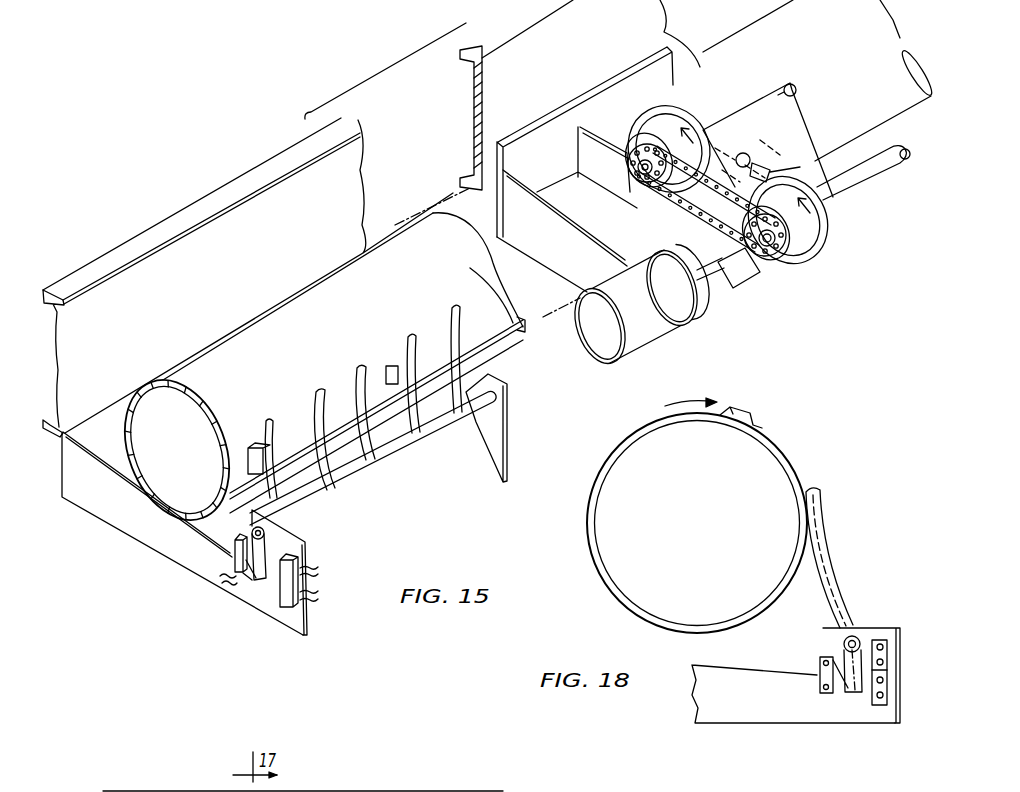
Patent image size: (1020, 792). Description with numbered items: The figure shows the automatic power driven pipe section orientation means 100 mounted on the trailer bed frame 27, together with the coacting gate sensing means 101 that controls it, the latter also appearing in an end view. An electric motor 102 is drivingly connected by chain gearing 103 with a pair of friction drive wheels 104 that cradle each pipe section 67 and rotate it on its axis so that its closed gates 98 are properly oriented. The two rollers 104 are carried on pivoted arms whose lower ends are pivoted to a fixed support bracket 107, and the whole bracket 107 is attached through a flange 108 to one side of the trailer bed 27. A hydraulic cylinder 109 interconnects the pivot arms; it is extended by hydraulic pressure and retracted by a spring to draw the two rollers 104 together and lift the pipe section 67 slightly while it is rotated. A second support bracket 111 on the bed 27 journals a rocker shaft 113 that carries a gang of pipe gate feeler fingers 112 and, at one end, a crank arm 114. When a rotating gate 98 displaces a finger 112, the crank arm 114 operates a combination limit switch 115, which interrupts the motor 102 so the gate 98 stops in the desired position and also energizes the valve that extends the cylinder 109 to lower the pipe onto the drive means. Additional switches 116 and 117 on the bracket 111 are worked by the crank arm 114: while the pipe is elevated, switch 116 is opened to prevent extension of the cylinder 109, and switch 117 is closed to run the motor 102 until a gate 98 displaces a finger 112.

In FIG. 15, the bed frame 27 is at (310, 242).
In FIG. 15, the pipe section 67 is at (255, 374).
In FIG. 18, the pipe section 67 is at (588, 553).
In FIG. 15, the gates 98 is at (297, 427).
In FIG. 18, the gates 98 is at (758, 418).
In FIG. 15, the pipe gate orientation means 100 is at (820, 251).
In FIG. 15, the gate sensing means 101 is at (410, 451).
In FIG. 15, the electric motor 102 is at (648, 311).
In FIG. 15, the chain gearing 103 is at (657, 223).
In FIG. 15, the friction drive wheels 104 is at (690, 118).
In FIG. 15, the support bracket 107 is at (606, 182).
In FIG. 15, the flange 108 is at (558, 127).
In FIG. 15, the hydraulic cylinder 109 is at (778, 165).
In FIG. 15, the support bracket 111 is at (107, 497).
In FIG. 18, the support bracket 111 is at (784, 713).
In FIG. 15, the pipe gate feeler fingers 112 is at (320, 387).
In FIG. 18, the pipe gate feeler fingers 112 is at (831, 495).
In FIG. 15, the rocker shaft 113 is at (370, 470).
In FIG. 18, the rocker shaft 113 is at (843, 640).
In FIG. 15, the crank arm 114 is at (251, 581).
In FIG. 18, the crank arm 114 is at (842, 657).
In FIG. 15, the combination electrical limit switch 115 is at (233, 552).
In FIG. 18, the combination electrical limit switch 115 is at (822, 674).
In FIG. 15, the switch 116 is at (307, 543).
In FIG. 18, the switch 116 is at (880, 640).
In FIG. 15, the switch 117 is at (285, 608).
In FIG. 18, the switch 117 is at (885, 705).